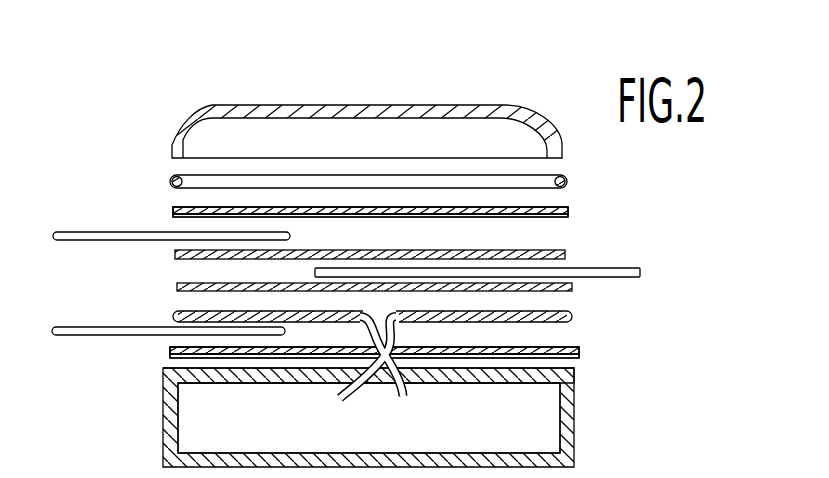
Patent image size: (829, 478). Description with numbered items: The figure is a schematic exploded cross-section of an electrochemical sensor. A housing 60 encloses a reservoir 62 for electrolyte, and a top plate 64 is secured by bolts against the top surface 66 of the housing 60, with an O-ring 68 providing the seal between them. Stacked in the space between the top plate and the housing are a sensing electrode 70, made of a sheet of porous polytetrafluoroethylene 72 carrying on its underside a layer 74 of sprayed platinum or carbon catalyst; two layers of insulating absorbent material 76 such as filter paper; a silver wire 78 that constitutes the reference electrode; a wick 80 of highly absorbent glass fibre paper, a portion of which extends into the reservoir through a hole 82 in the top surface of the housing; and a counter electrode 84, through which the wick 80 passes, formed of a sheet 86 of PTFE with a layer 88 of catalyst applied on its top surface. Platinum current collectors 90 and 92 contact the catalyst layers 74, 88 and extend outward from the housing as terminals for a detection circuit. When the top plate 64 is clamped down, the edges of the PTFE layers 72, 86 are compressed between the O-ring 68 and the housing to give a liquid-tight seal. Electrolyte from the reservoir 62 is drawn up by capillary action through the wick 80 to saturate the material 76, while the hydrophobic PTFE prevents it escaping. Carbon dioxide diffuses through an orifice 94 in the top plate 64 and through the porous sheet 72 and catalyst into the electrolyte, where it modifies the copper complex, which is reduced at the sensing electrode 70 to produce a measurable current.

The housing 60 is at (575, 415).
The reservoir 62 is at (275, 438).
The top plate 64 is at (211, 105).
The top surface 66 is at (575, 364).
The O-ring 68 is at (568, 178).
The sensing electrode 70 is at (590, 208).
The sheet of porous polytetrafluoroethylene 72 is at (178, 213).
The layer of catalyst 74 is at (565, 219).
The layers of insulating absorbent material 76 is at (566, 254).
The silver wire 78 is at (640, 276).
The wick 80 is at (173, 318).
The hole 82 is at (400, 378).
The counter electrode 84 is at (597, 344).
The sheet of PTFE 86 is at (169, 358).
The layer of catalyst 88 is at (170, 352).
The platinum current collector 90 is at (107, 241).
The platinum current collector 92 is at (60, 328).
The orifice 94 is at (371, 104).